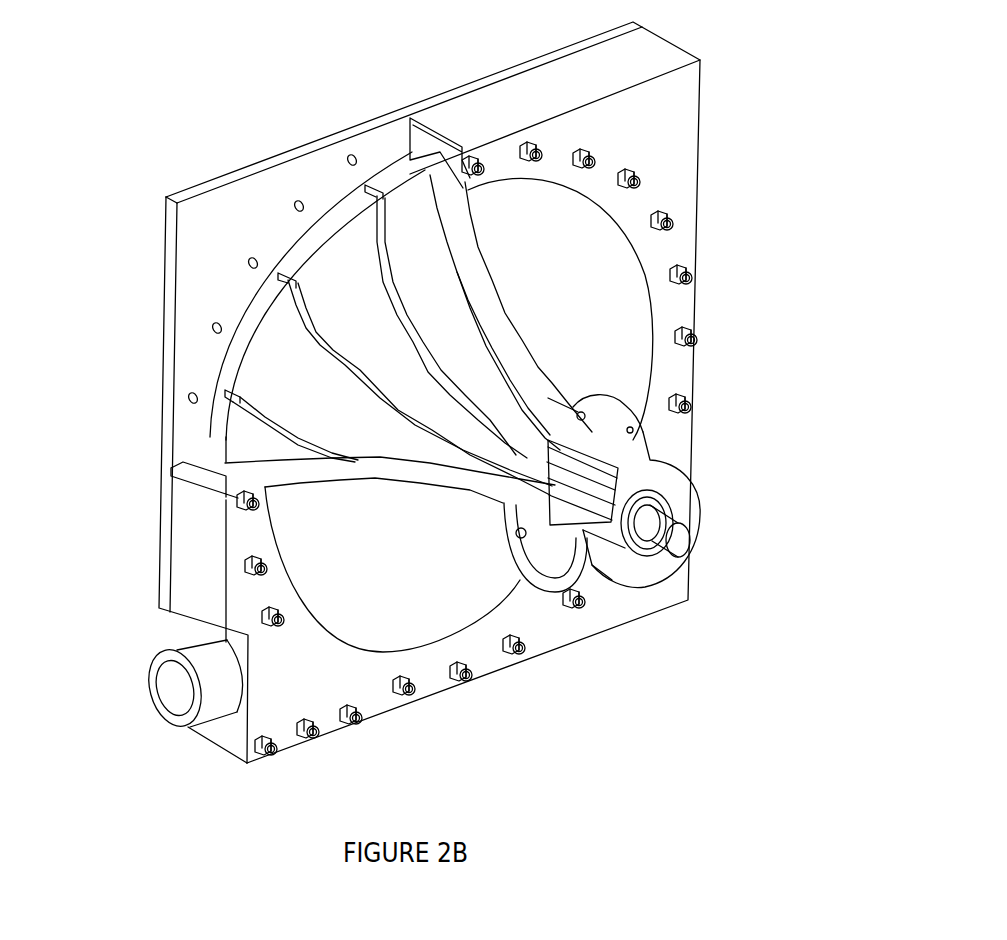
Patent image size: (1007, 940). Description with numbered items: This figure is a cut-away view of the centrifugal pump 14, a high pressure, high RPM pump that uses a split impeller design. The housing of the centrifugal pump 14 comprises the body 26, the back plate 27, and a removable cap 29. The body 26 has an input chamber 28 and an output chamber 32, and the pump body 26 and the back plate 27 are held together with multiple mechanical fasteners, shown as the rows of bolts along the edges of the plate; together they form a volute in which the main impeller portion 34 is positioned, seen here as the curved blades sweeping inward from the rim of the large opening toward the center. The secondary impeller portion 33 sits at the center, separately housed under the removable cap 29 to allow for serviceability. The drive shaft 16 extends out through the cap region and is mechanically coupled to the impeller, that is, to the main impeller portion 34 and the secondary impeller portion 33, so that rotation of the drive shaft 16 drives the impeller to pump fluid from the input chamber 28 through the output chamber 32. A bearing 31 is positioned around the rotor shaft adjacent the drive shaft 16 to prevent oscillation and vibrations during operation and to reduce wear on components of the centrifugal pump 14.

The centrifugal pump 14 is at (740, 83).
The drive shaft 16 is at (680, 547).
The body 26 is at (487, 107).
The back plate 27 is at (235, 215).
The input chamber 28 is at (560, 563).
The removable cap 29 is at (677, 487).
The bearing 31 is at (676, 508).
The output chamber 32 is at (178, 688).
The secondary impeller portion 33 is at (571, 491).
The main impeller portion 34 is at (278, 388).